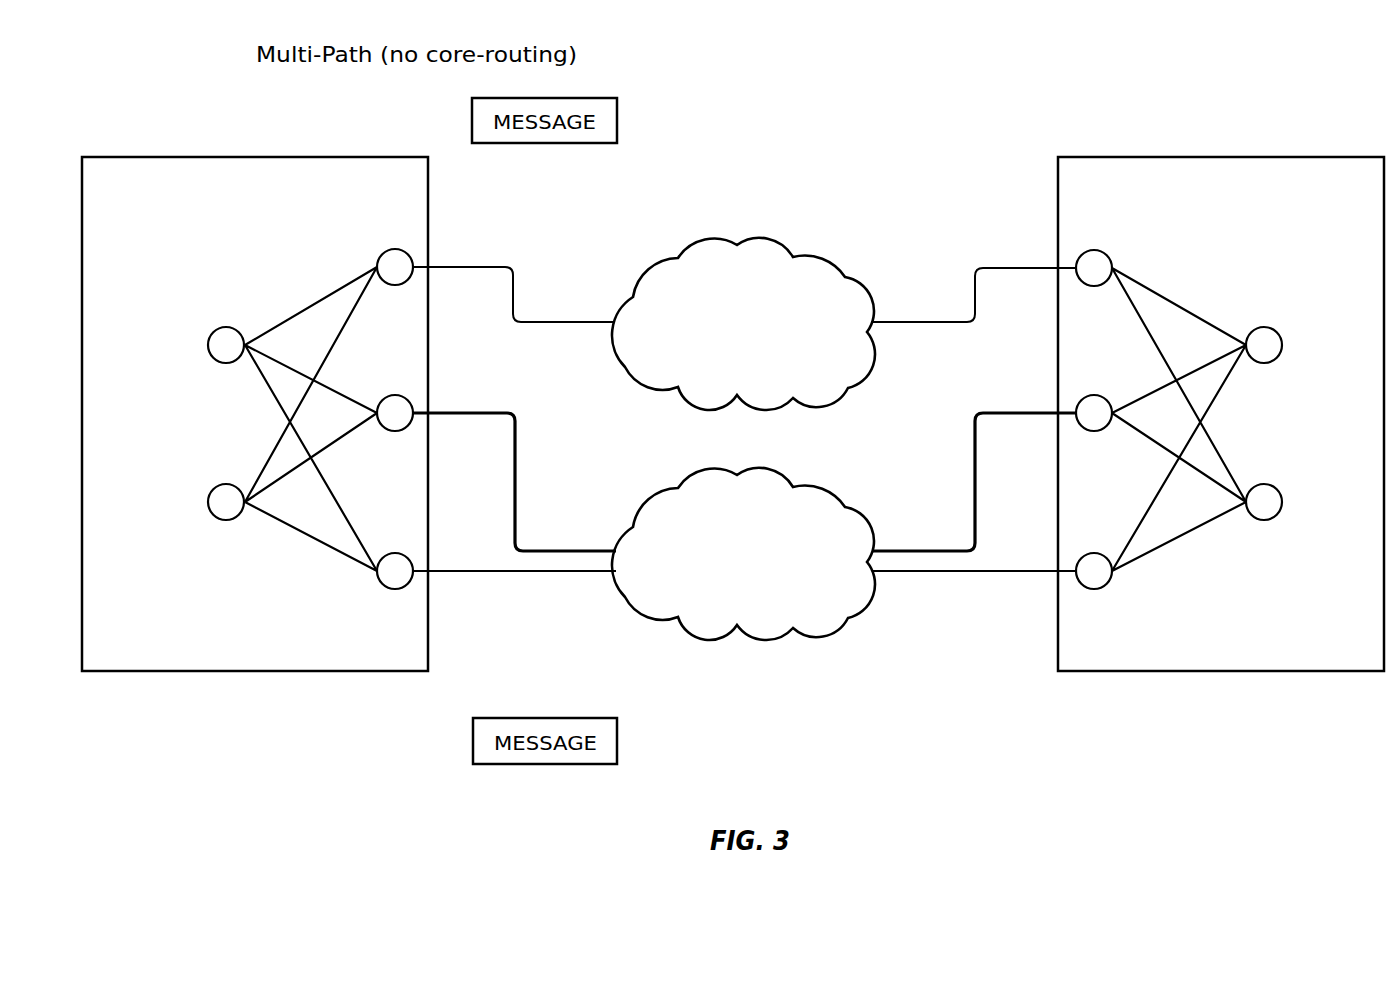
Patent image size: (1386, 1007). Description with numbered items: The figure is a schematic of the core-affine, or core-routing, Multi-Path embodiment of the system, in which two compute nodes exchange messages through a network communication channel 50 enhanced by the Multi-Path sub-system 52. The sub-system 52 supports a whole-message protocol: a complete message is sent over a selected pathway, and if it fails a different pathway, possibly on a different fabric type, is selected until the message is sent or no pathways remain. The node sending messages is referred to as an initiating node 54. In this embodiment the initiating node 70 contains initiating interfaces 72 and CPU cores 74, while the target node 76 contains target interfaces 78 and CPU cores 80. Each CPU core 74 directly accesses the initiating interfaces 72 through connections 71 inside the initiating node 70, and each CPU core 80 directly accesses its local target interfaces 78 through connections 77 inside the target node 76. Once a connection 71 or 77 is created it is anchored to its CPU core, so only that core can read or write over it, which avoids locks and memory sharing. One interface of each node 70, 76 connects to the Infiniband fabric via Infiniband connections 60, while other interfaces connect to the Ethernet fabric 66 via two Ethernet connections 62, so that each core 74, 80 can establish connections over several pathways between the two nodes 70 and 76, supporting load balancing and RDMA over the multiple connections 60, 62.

The network communication channel 50 is at (594, 600).
The Multi-Path sub-system 52 is at (940, 188).
The initiating node 54 is at (743, 273).
The Infiniband connections 60 is at (455, 266).
The Ethernet connections 62 is at (458, 580).
The Ethernet fabric 66 is at (820, 600).
The initiating node 70 is at (342, 675).
The connections 71 is at (337, 287).
The initiating interfaces 72 is at (400, 285).
The CPU cores 74 is at (213, 332).
The target node 76 is at (1140, 675).
The connections 77 is at (1148, 287).
The target interfaces 78 is at (1090, 285).
The CPU cores 80 is at (1280, 332).